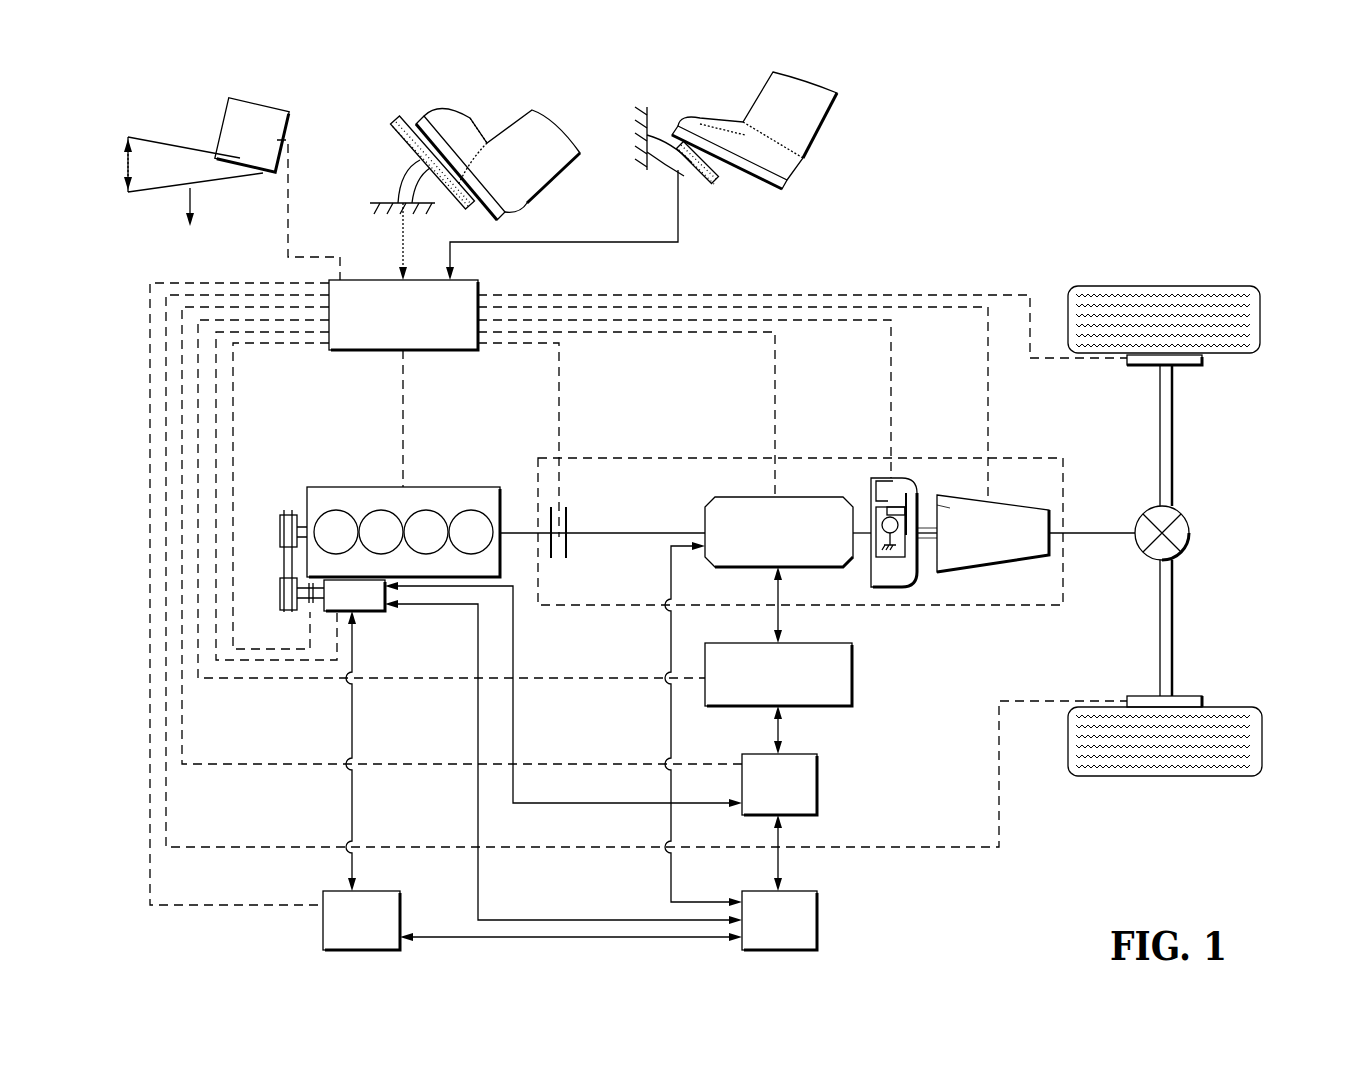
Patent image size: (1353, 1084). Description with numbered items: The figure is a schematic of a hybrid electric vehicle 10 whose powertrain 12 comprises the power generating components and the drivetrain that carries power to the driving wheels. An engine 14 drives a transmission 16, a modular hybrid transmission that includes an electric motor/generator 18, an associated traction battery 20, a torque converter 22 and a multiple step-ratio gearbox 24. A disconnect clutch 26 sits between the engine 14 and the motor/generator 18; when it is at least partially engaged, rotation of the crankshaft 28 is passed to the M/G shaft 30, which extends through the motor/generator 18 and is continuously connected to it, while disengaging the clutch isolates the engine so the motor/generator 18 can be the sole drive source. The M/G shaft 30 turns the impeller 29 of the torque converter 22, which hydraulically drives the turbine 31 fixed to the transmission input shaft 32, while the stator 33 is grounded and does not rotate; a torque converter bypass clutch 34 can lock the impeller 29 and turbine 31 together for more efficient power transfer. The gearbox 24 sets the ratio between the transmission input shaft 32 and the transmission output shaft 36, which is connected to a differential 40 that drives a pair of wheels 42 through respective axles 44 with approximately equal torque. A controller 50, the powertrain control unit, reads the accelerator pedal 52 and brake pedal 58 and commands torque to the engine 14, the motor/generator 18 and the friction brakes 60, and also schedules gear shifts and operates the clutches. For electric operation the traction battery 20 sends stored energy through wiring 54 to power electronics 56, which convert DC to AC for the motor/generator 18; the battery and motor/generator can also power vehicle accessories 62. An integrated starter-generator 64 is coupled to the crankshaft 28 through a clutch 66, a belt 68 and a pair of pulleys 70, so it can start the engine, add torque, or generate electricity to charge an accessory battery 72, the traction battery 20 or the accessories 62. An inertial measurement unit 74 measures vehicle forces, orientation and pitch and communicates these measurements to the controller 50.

The hybrid electric vehicle 10 is at (967, 88).
The powertrain 12 is at (465, 700).
The engine 14 is at (360, 487).
The transmission 16 is at (857, 458).
The electric motor/generator 18 is at (748, 497).
The traction battery 20 is at (817, 785).
The torque converter 22 is at (890, 588).
The gearbox 24 is at (995, 563).
The disconnect clutch 26 is at (567, 520).
The crankshaft 28 is at (303, 525).
The impeller 29 is at (925, 530).
The M/G shaft 30 is at (648, 533).
The turbine 31 is at (880, 517).
The transmission input shaft 32 is at (943, 510).
The stator 33 is at (888, 532).
The torque converter bypass clutch 34 is at (895, 487).
The transmission output shaft 36 is at (1090, 533).
The differential 40 is at (1192, 533).
The wheels 42 is at (1165, 286).
The axles 44 is at (1172, 433).
The controller 50 is at (373, 280).
The accelerator pedal 52 is at (415, 157).
The wiring 54 is at (775, 728).
The power electronics 56 is at (852, 678).
The brake pedal 58 is at (716, 178).
The friction brakes 60 is at (1205, 360).
The vehicle accessories 62 is at (817, 920).
The integrated starter-generator 64 is at (373, 613).
The clutch 66 is at (292, 612).
The belt 68 is at (280, 568).
The pulleys 70 is at (280, 532).
The accessory battery 72 is at (400, 915).
The inertial measurement unit 74 is at (255, 100).